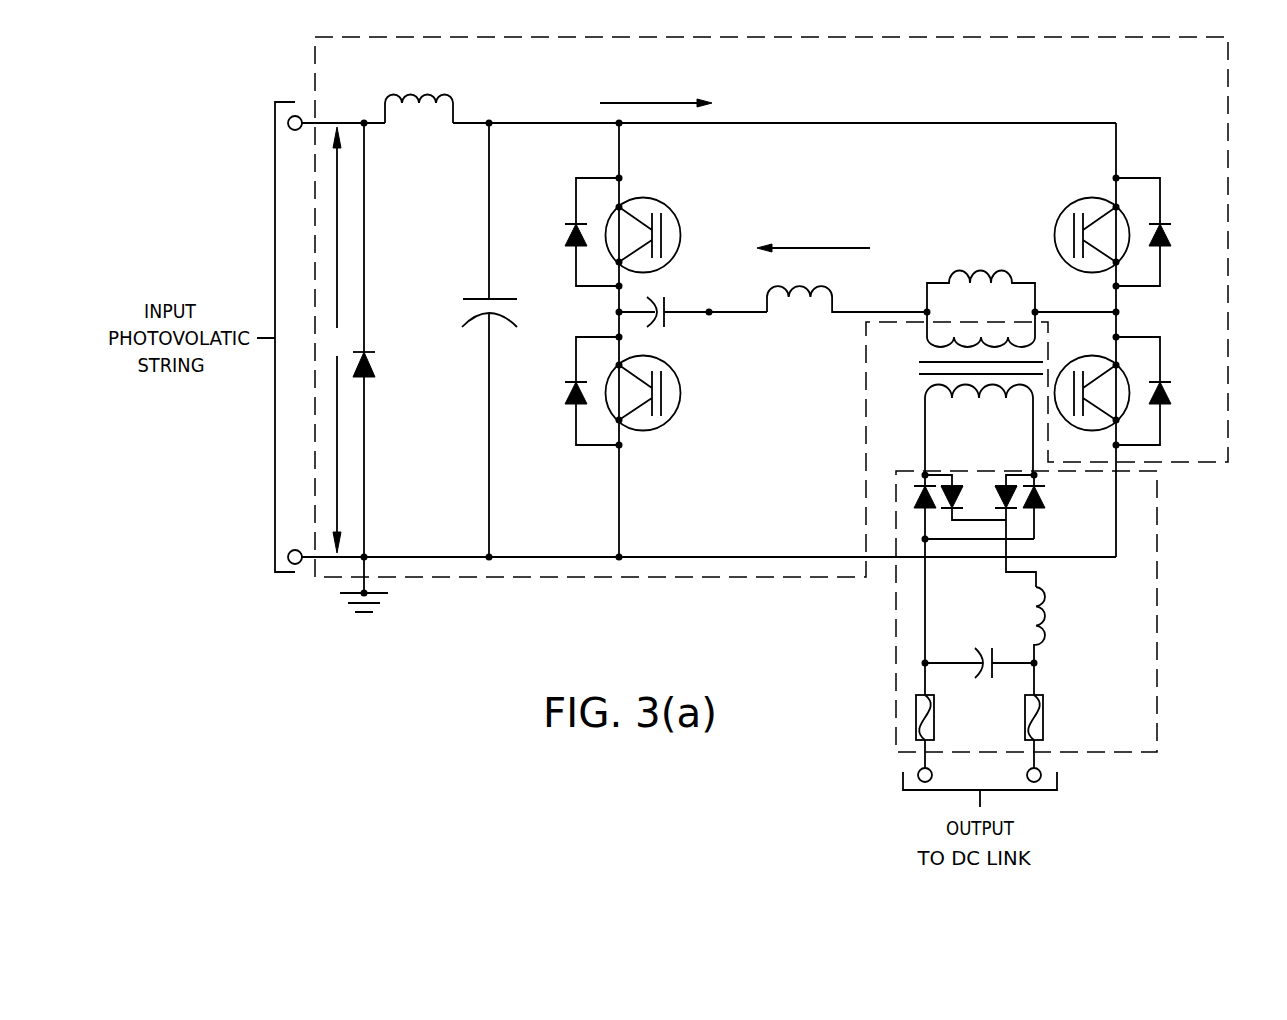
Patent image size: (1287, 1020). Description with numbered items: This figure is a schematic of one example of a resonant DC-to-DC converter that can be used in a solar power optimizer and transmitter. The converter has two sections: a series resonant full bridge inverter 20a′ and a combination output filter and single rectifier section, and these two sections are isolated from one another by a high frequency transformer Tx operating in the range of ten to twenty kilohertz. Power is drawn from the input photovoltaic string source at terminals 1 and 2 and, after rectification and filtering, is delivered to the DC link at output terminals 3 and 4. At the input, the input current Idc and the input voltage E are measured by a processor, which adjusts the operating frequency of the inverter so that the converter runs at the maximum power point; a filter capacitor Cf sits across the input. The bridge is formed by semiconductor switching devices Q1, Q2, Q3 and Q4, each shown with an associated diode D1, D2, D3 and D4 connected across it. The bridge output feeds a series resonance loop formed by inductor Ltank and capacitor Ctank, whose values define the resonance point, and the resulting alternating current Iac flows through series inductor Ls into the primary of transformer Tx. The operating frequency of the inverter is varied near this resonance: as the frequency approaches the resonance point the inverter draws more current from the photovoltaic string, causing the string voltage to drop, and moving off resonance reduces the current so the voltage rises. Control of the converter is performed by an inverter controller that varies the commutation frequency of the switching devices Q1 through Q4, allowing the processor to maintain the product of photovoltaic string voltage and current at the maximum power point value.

The input terminal 1 is at (336, 141).
The input terminal 2 is at (325, 545).
The first output terminal 3 is at (934, 764).
The second output terminal 4 is at (1025, 764).
The series resonant full bridge inverter 20a′ is at (1200, 106).
The input voltage E is at (337, 340).
The input current Idc is at (656, 91).
The AC resonant current Iac is at (813, 235).
The input filter capacitor Cf is at (475, 340).
The antiparallel diode of Q1 D1 is at (575, 232).
The semiconductor switching device Q1 is at (661, 235).
The antiparallel diode of Q4 D4 is at (575, 391).
The semiconductor switching device Q4 is at (661, 393).
The capacitor Ctank is at (693, 318).
The inductor Ltank is at (847, 285).
The series inductor Ls is at (1021, 271).
The high frequency transformer Tx is at (968, 393).
The antiparallel diode of Q3 D3 is at (1161, 232).
The semiconductor switching device Q3 is at (1075, 235).
The antiparallel diode of Q2 D2 is at (1161, 391).
The semiconductor switching device Q2 is at (1092, 408).